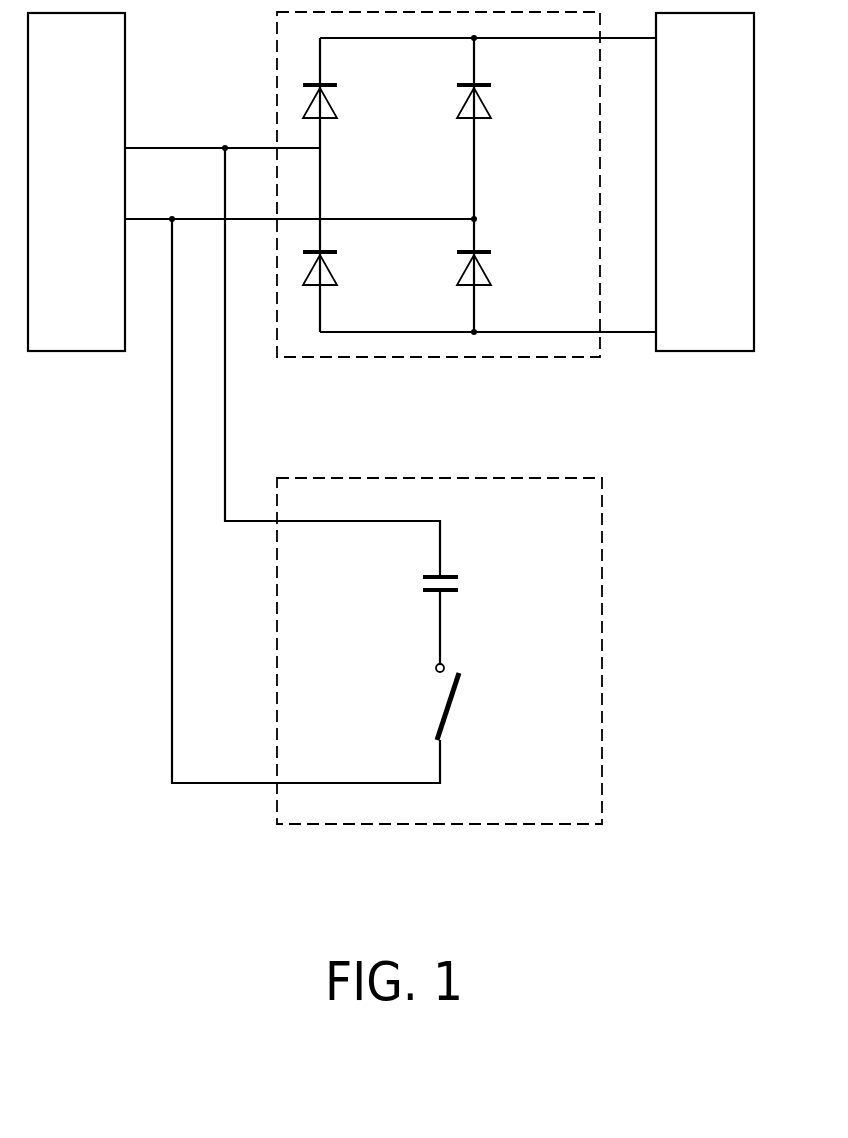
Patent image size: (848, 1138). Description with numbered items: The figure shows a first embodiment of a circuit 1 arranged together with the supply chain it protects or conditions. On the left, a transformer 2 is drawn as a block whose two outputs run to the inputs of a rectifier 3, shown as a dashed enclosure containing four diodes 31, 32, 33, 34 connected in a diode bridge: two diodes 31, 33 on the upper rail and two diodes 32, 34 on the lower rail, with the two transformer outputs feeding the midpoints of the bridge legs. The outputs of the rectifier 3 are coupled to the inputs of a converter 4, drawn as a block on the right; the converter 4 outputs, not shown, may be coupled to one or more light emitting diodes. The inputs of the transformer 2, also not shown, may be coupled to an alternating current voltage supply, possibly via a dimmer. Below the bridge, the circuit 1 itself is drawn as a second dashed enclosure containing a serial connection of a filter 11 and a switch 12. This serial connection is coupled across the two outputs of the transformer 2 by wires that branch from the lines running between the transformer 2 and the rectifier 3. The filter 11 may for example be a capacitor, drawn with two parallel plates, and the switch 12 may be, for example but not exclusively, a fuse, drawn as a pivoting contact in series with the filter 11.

The circuit 1 is at (465, 824).
The transformer 2 is at (75, 352).
The rectifier 3 is at (530, 357).
The converter 4 is at (705, 352).
The filter 11 is at (454, 583).
The switch 12 is at (452, 705).
The diode 31 is at (322, 92).
The diode 32 is at (322, 259).
The diode 33 is at (476, 92).
The diode 34 is at (476, 259).